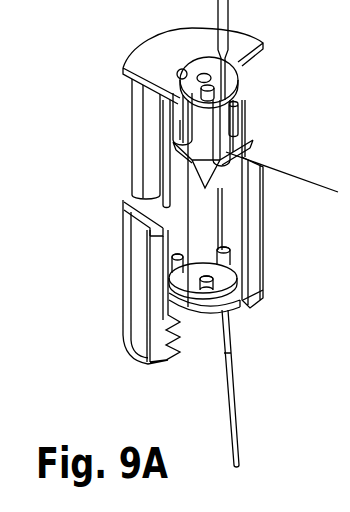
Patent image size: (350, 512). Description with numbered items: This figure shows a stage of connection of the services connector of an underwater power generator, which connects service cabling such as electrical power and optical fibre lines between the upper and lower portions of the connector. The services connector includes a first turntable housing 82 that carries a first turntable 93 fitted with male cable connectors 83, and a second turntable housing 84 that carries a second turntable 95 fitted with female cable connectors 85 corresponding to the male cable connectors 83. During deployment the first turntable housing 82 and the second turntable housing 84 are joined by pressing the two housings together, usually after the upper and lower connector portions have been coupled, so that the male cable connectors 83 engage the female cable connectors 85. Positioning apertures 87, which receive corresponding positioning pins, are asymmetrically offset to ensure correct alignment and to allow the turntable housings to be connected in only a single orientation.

The first turntable 93 is at (243, 77).
The male cable connectors 83 is at (218, 118).
The first turntable housing 82 is at (155, 153).
The second turntable housing 84 is at (233, 220).
The positioning apertures 87 is at (165, 267).
The female cable connectors 85 is at (226, 268).
The second turntable 95 is at (183, 280).